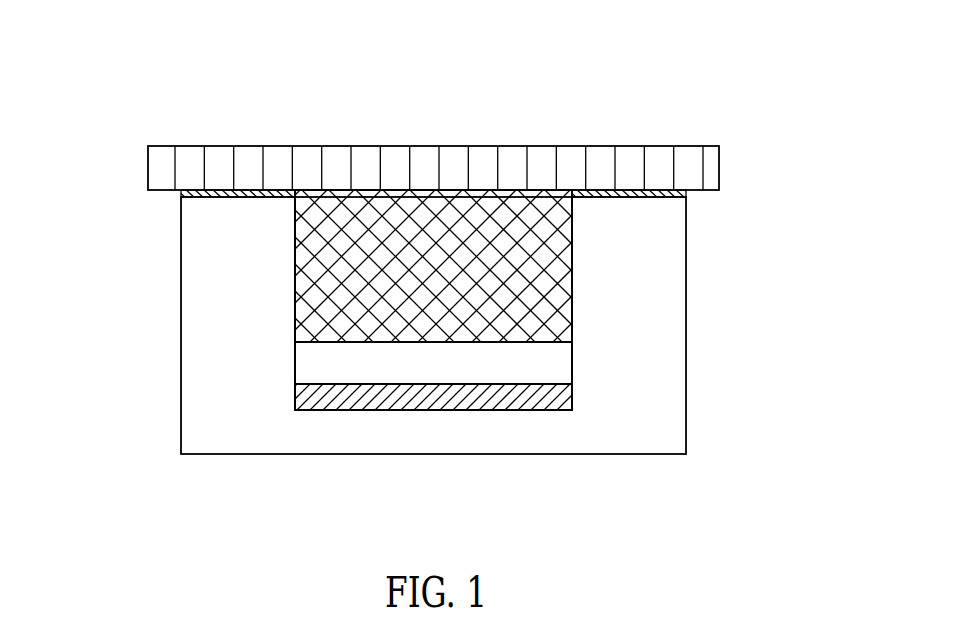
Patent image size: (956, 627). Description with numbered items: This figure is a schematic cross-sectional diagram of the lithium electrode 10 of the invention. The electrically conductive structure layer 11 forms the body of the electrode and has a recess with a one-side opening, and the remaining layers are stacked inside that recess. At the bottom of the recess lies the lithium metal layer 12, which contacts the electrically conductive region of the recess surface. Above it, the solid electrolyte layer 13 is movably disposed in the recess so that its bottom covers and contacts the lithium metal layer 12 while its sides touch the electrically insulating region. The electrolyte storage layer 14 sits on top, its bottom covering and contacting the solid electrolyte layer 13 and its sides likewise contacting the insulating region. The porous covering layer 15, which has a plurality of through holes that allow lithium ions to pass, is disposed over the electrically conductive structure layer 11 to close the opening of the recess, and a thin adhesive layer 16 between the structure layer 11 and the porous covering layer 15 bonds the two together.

The lithium electrode 10 is at (106, 96).
The electrically conductive structure layer 11 is at (182, 302).
The lithium metal layer 12 is at (560, 410).
The solid electrolyte layer 13 is at (557, 364).
The electrolyte storage layer 14 is at (567, 280).
The porous covering layer 15 is at (720, 168).
The adhesive layer 16 is at (182, 194).